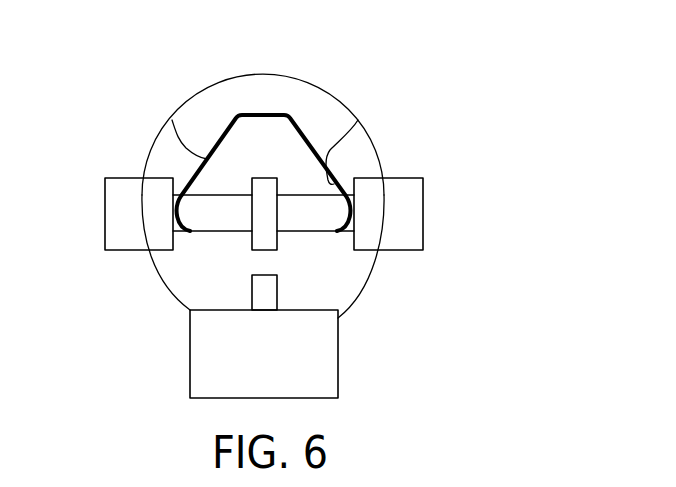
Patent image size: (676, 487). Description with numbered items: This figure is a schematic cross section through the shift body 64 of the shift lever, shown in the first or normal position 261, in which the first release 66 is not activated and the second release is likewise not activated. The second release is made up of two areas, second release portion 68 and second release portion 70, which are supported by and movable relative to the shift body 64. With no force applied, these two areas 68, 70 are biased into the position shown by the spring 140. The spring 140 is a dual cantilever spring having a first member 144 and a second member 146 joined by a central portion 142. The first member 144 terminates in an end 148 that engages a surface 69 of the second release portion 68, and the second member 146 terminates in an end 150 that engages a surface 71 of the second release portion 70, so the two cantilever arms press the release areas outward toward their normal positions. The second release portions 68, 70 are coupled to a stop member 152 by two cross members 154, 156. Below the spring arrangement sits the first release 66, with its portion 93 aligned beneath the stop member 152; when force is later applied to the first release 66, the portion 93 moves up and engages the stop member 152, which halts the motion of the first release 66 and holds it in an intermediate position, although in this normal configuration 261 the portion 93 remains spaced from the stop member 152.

The normal position 261 is at (453, 105).
The shift body 64 is at (363, 284).
The first release 66 is at (205, 374).
The second release portion 68 is at (415, 198).
The surface of second release portion 69 is at (345, 177).
The second release portion 70 is at (113, 199).
The surface of second release portion 71 is at (177, 184).
The portion of first release 93 is at (252, 292).
The spring 140 is at (213, 129).
The central portion 142 is at (282, 114).
The first member 144 is at (358, 120).
The second member 146 is at (172, 120).
The end of first member 148 is at (354, 213).
The end of second member 150 is at (173, 213).
The stop member 152 is at (262, 187).
The cross member 154 is at (225, 224).
The cross member 156 is at (300, 223).